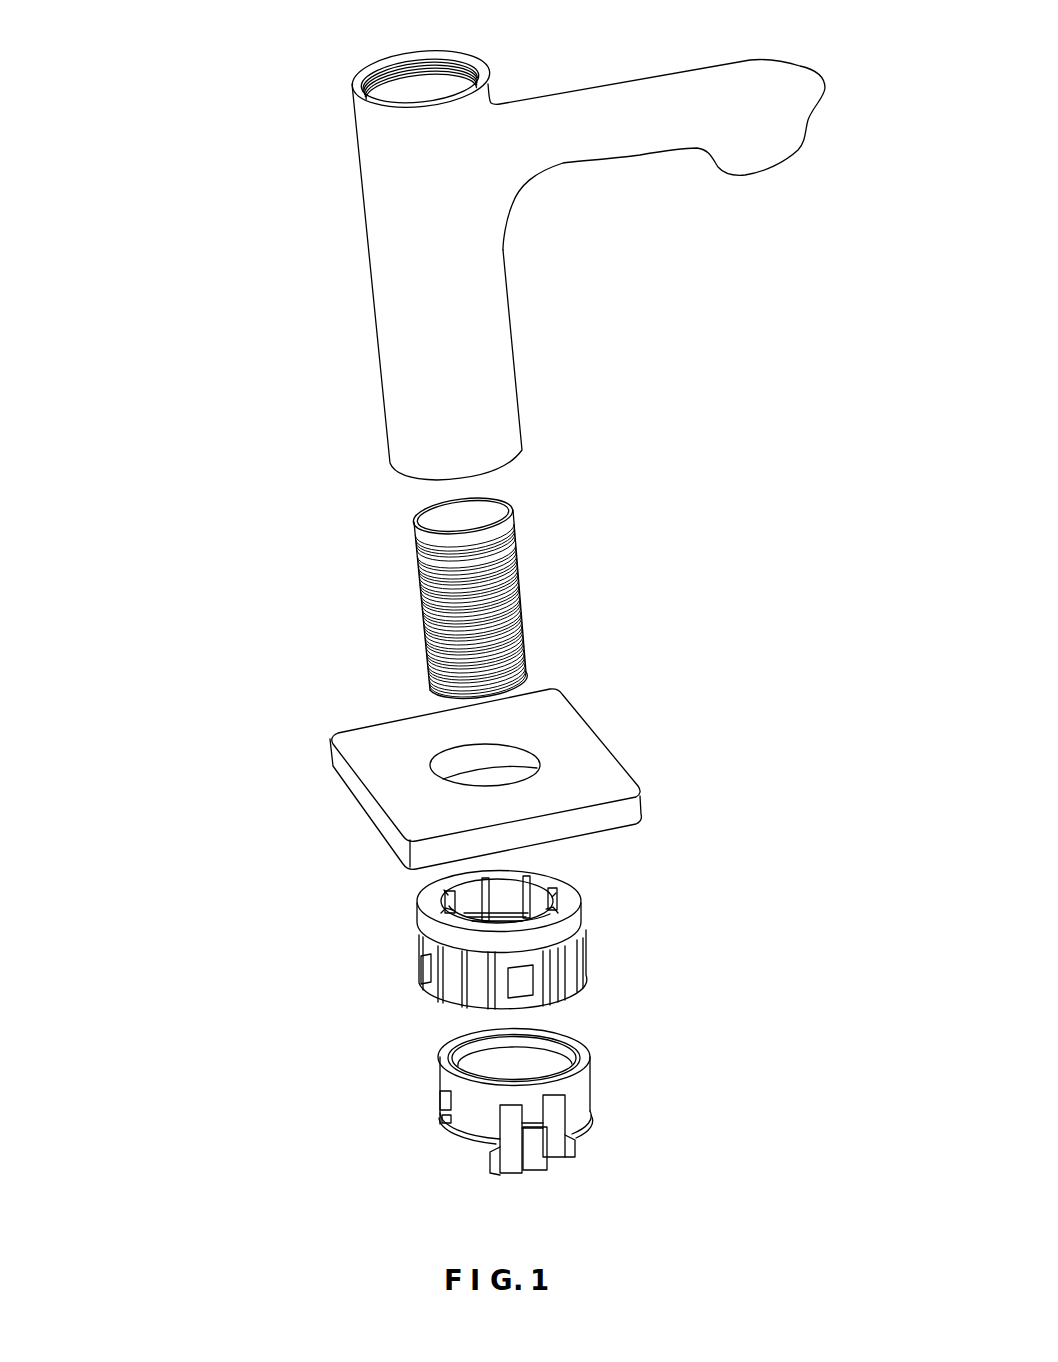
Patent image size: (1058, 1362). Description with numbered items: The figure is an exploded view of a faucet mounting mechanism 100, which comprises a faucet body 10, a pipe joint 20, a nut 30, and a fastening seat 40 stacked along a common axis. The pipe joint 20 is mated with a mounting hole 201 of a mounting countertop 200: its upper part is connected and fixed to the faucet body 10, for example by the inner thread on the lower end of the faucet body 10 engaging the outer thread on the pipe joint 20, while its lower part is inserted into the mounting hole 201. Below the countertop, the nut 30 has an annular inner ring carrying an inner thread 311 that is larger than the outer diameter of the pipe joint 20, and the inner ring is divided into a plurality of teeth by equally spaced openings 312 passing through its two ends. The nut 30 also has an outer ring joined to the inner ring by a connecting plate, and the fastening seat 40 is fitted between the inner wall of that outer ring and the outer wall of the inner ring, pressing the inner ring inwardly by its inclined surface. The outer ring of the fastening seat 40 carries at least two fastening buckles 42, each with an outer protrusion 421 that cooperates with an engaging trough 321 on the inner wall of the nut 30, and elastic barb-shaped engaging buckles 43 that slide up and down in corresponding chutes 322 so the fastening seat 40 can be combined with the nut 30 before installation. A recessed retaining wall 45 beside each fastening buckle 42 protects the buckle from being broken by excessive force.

The faucet mounting mechanism 100 is at (237, 105).
The faucet body 10 is at (477, 350).
The pipe joint 20 is at (522, 600).
The mounting countertop 200 is at (544, 764).
The mounting hole 201 is at (455, 758).
The nut 30 is at (505, 960).
The inner thread 311 is at (553, 899).
The opening 312 is at (441, 905).
The engaging trough 321 is at (517, 982).
The chute 322 is at (421, 968).
The fastening seat 40 is at (522, 1130).
The fastening buckle 42 is at (531, 1163).
The protrusion 421 is at (502, 1135).
The engaging buckle 43 is at (443, 1098).
The retaining wall 45 is at (562, 1148).